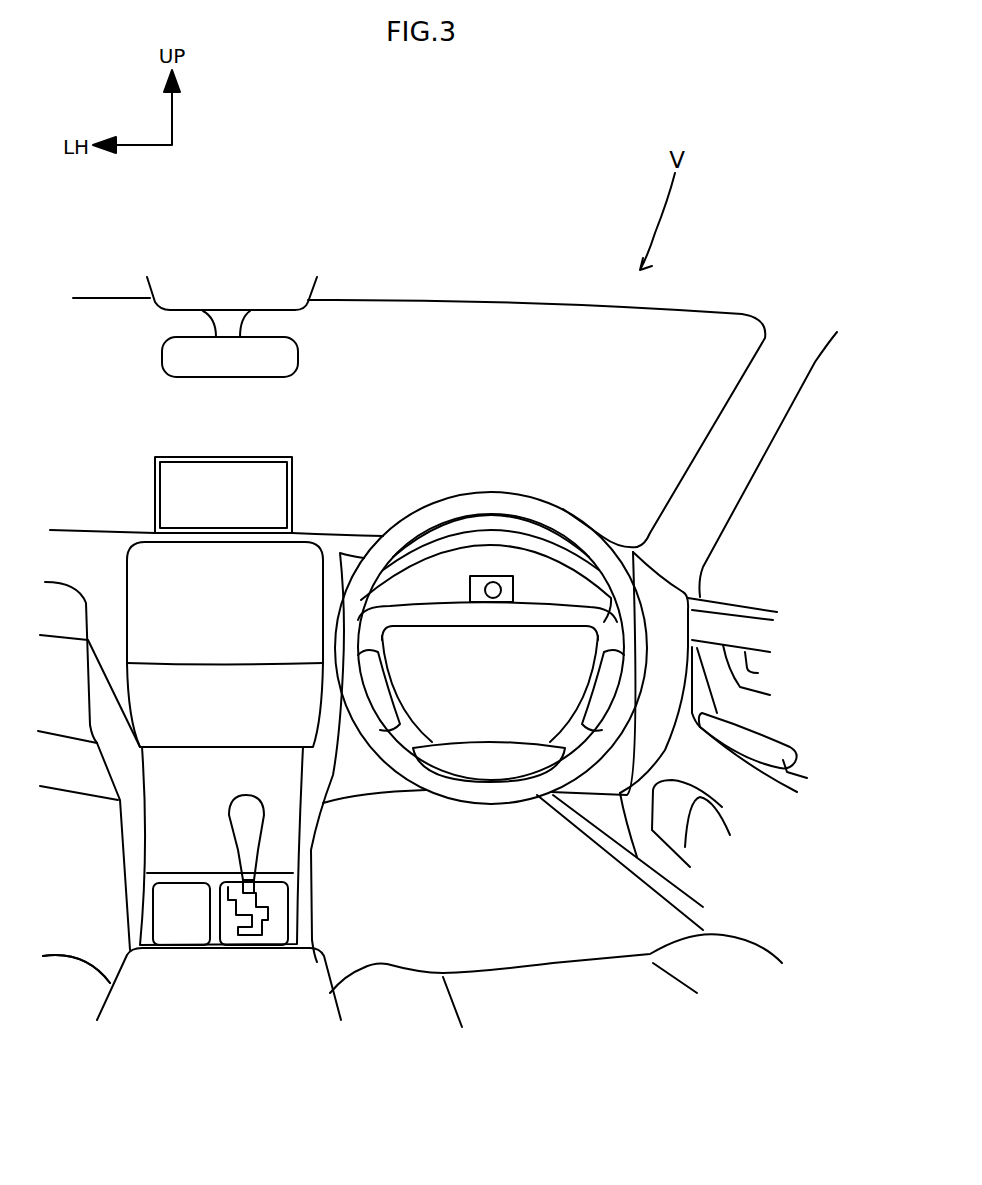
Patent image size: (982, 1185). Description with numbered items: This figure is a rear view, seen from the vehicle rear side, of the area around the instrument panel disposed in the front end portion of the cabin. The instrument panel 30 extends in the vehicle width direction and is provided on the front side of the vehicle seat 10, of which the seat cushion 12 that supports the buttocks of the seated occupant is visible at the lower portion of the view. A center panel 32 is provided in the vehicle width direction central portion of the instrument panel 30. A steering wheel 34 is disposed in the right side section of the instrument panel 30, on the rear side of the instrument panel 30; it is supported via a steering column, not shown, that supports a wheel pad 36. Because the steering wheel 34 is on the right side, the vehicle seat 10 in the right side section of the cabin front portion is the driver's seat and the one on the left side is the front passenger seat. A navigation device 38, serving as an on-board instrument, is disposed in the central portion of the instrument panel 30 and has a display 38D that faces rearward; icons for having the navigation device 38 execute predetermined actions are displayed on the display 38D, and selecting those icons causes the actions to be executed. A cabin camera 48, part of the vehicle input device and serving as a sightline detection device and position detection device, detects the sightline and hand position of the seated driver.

The vehicle seat 10 is at (76, 969).
The seat cushion 12 is at (70, 980).
The instrument panel 30 is at (330, 537).
The center panel 32 is at (143, 577).
The steering wheel 34 is at (540, 500).
The wheel pad 36 is at (433, 604).
The navigation device 38 is at (235, 461).
The display 38D is at (250, 475).
The cabin camera 48 is at (493, 574).